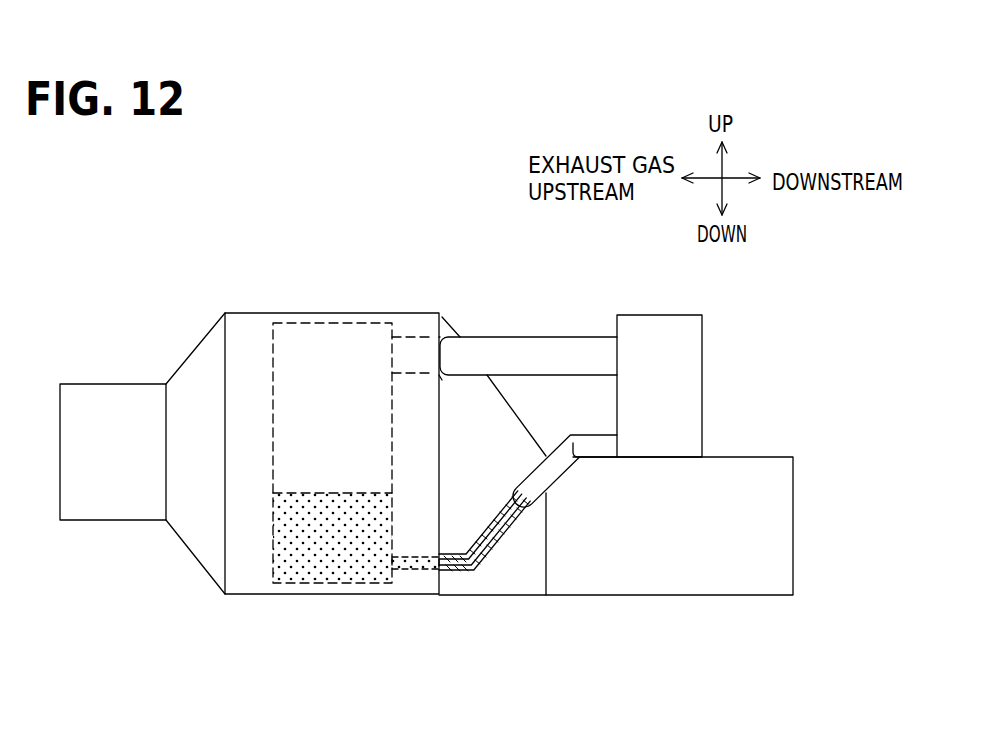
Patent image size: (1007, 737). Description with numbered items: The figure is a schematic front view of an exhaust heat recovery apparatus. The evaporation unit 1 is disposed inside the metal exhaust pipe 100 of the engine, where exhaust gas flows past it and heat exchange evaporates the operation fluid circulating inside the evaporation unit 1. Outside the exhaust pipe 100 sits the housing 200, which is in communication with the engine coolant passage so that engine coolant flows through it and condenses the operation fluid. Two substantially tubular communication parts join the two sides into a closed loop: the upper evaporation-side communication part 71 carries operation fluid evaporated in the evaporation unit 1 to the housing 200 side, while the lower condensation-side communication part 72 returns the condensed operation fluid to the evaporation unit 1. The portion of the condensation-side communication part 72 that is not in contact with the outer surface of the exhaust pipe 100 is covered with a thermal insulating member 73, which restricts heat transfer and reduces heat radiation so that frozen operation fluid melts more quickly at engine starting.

The evaporation unit 1 is at (307, 348).
The exhaust pipe 100 is at (243, 572).
The evaporation-side communication part 71 is at (548, 352).
The condensation-side communication part 72 is at (507, 530).
The thermal insulating member 73 is at (573, 460).
The housing 200 is at (683, 420).